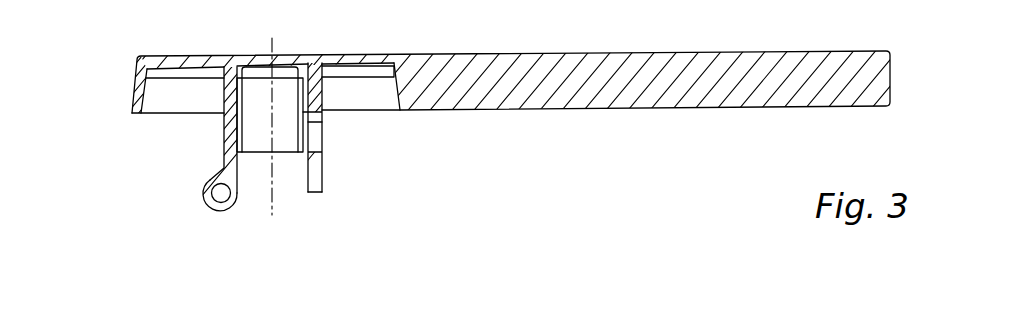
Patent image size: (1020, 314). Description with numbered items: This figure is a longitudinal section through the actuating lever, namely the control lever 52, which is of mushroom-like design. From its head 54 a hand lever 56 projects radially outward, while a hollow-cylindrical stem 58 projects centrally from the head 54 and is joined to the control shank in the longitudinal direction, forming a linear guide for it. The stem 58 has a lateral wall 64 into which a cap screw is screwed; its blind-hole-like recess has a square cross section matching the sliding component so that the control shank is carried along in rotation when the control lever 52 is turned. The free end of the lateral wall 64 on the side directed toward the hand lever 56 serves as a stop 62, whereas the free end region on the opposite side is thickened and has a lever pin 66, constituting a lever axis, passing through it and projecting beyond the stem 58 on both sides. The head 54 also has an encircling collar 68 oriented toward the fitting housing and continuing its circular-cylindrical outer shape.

The control lever 52 is at (497, 116).
The head 54 is at (140, 56).
The hand lever 56 is at (622, 93).
The stem 58 is at (323, 161).
The stop 62 is at (313, 196).
The lateral wall 64 is at (233, 147).
The lever pin 66 is at (222, 198).
The collar 68 is at (132, 114).